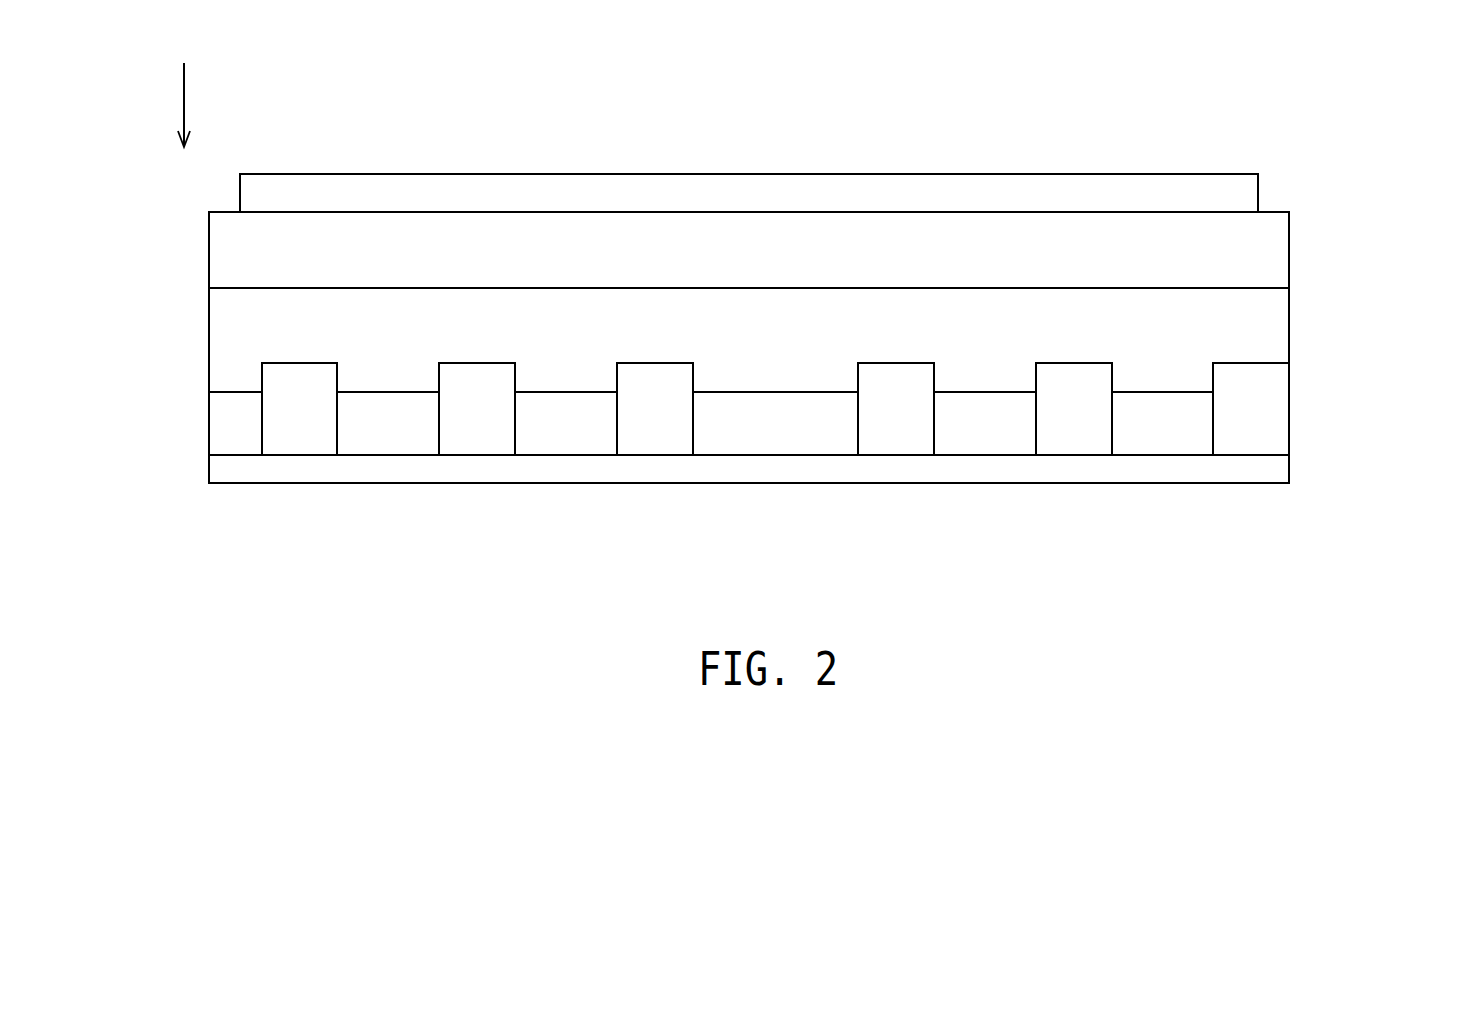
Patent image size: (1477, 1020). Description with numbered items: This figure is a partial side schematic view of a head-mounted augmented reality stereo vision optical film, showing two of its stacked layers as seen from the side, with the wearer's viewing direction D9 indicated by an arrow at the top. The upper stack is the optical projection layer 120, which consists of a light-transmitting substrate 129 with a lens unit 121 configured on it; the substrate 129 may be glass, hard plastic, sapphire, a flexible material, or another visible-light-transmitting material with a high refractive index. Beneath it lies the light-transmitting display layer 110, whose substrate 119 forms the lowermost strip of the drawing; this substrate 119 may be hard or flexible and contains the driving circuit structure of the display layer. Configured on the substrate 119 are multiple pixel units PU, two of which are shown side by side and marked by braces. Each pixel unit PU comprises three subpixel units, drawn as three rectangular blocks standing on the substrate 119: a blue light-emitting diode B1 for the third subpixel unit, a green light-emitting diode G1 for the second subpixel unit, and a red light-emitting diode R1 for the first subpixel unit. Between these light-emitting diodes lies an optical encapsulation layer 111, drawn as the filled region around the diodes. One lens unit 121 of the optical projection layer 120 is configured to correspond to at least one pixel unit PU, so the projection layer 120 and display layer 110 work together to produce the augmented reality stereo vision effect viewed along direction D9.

The optical projection layer 120 is at (837, 192).
The lens unit 121 is at (1245, 195).
The substrate 129 is at (1266, 253).
The light-transmitting display layer 110 is at (766, 445).
The optical encapsulation layer 111 is at (236, 422).
The substrate 119 is at (1266, 473).
The viewing direction D9 is at (181, 113).
The blue light-emitting diode B1 is at (300, 430).
The green light-emitting diode G1 is at (470, 430).
The red light-emitting diode R1 is at (648, 430).
The pixel unit PU is at (688, 553).